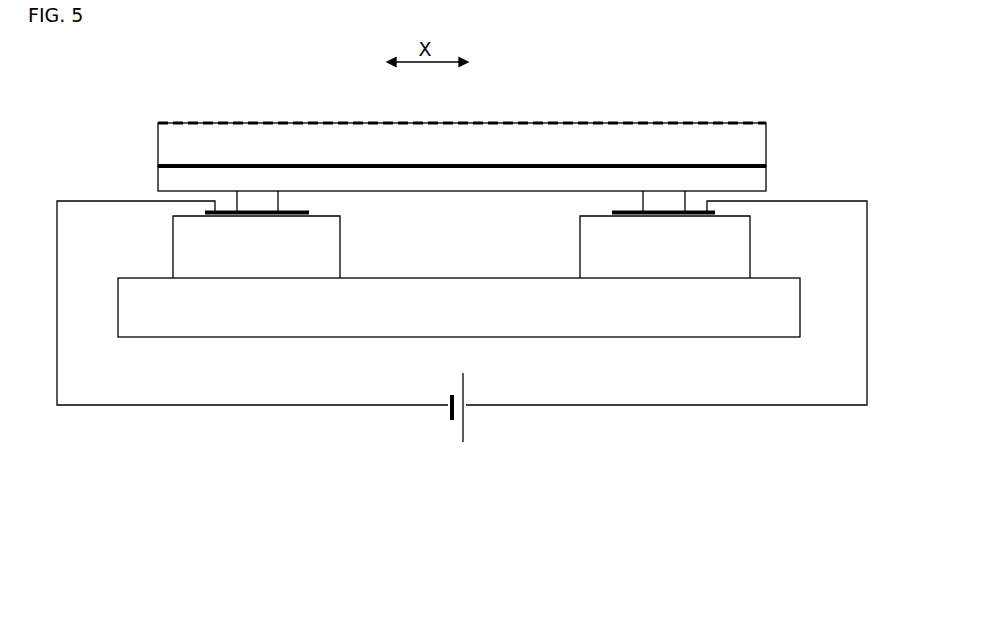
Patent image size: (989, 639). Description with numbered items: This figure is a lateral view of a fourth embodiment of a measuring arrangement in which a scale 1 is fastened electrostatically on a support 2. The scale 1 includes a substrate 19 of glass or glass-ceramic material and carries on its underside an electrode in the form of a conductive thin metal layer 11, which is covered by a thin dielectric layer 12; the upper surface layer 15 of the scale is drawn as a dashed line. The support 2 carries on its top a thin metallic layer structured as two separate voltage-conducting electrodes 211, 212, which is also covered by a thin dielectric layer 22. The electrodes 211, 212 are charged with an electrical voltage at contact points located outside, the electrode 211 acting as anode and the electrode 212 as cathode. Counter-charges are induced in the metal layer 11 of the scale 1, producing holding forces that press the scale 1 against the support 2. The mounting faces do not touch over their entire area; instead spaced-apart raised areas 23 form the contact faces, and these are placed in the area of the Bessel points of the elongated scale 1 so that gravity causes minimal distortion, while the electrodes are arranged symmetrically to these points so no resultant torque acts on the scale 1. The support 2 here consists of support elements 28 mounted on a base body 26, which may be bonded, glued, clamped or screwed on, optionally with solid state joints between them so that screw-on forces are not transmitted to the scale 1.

The scale 1 is at (491, 125).
The surface layer 15 is at (173, 120).
The conductive thin metal layer 11 is at (322, 163).
The dielectric layer 12 is at (475, 180).
The substrate 19 is at (568, 147).
The raised areas 23 is at (244, 212).
The support 2 is at (462, 329).
The dielectric layer 22 is at (247, 213).
The support elements 28 is at (319, 265).
The electrode 211 is at (292, 214).
The electrode 212 is at (627, 214).
The base body 26 is at (815, 343).